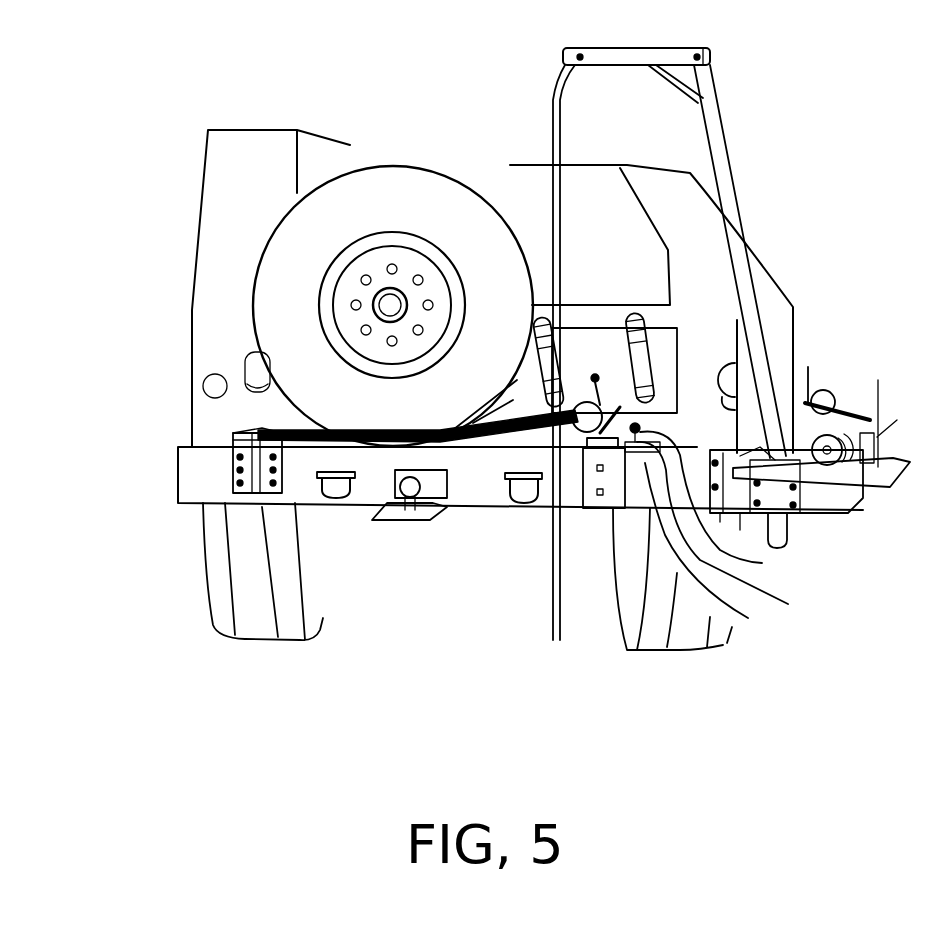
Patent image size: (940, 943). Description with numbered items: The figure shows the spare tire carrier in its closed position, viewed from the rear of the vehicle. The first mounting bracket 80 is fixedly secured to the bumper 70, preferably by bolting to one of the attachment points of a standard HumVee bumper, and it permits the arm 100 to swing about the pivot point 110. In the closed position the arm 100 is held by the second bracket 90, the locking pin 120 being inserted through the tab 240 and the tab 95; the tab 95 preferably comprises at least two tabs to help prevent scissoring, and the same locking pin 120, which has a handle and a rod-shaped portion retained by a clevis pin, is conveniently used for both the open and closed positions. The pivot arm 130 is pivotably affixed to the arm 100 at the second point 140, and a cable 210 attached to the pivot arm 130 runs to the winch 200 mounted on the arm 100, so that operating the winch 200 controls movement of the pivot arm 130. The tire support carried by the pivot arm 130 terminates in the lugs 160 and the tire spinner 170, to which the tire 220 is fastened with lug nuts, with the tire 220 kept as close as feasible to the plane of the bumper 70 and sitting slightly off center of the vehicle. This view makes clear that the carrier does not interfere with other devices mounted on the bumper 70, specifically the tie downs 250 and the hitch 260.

The bumper 70 is at (453, 495).
The first mounting bracket 80 is at (233, 485).
The second bracket 90 is at (567, 453).
The tab 95 is at (737, 534).
The arm 100 is at (503, 490).
The pivot point 110 is at (245, 426).
The locking pin 120 is at (726, 503).
The pivot arm 130 is at (321, 503).
The second point 140 is at (295, 520).
The lugs 160 is at (352, 305).
The tire spinner 170 is at (395, 290).
The winch 200 is at (562, 510).
The cable 210 is at (520, 440).
The tire 220 is at (475, 205).
The tab 240 is at (719, 558).
The tie downs 250 is at (343, 505).
The hitch 260 is at (405, 523).